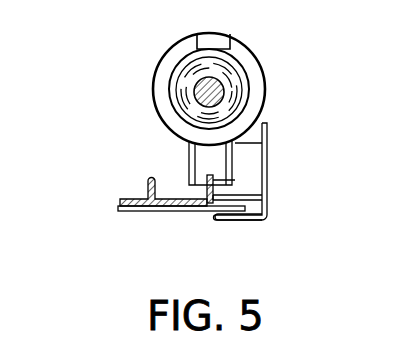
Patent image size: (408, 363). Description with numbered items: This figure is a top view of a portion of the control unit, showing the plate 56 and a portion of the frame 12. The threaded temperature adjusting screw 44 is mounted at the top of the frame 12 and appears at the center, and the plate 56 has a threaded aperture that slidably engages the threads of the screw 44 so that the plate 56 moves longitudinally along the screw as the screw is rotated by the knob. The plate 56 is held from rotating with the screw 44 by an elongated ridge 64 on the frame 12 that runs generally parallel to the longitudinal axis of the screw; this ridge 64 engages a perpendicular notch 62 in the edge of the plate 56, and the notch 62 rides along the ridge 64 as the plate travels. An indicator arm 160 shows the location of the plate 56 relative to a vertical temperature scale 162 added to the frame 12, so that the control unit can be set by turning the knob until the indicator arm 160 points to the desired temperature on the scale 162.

The frame 12 is at (148, 183).
The temperature adjusting screw 44 is at (221, 82).
The plate 56 is at (265, 78).
The notch 62 is at (235, 180).
The elongated ridge 64 is at (266, 208).
The indicator arm 160 is at (267, 194).
The vertical temperature scale 162 is at (147, 212).